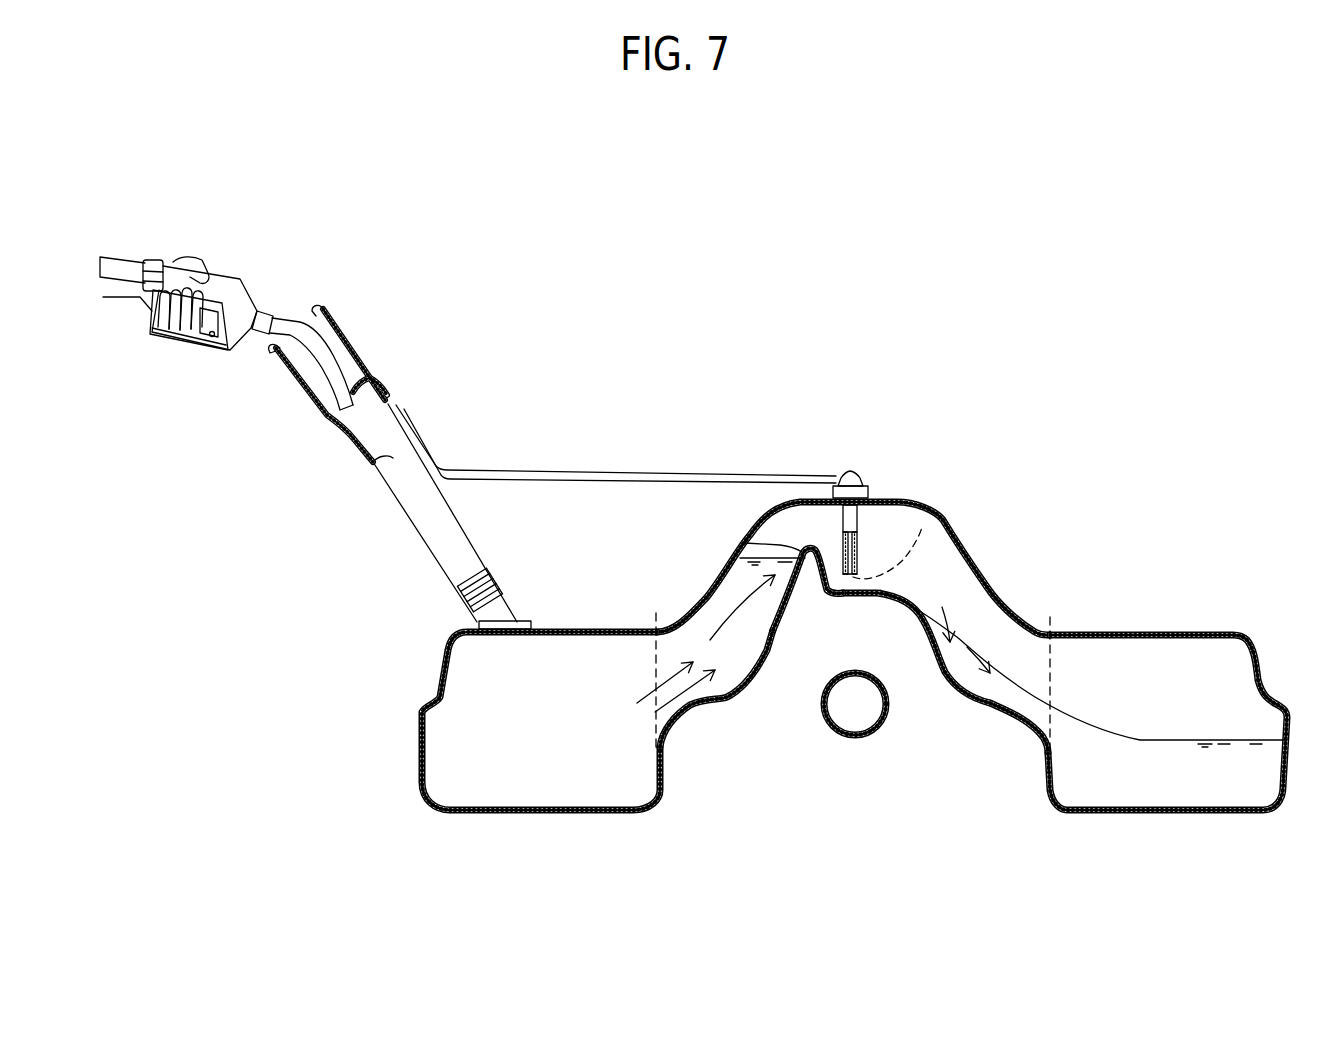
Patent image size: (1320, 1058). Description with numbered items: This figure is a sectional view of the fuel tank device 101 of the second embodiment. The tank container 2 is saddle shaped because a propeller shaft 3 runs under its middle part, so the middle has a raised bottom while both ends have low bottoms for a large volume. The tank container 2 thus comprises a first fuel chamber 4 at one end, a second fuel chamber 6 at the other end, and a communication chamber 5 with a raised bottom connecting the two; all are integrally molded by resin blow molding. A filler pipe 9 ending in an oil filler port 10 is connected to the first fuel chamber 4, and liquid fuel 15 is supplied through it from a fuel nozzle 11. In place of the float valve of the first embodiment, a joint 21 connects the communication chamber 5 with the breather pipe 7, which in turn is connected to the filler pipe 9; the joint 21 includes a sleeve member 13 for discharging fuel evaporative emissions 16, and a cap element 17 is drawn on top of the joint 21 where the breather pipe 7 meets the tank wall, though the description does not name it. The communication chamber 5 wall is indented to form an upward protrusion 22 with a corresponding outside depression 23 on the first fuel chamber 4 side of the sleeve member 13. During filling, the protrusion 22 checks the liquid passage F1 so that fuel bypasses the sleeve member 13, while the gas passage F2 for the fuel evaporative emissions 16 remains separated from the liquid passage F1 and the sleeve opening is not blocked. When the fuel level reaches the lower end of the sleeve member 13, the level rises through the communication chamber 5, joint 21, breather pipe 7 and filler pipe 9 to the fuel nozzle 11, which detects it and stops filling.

The tank container 2 is at (608, 628).
The propeller shaft 3 is at (828, 689).
The first fuel chamber 4 is at (530, 817).
The communication chamber 5 is at (963, 688).
The second fuel chamber 6 is at (1230, 817).
The breather pipe 7 is at (560, 473).
The filler pipe 9 is at (418, 510).
The oil filler port 10 is at (333, 397).
The fuel nozzle 11 is at (225, 283).
The sleeve member 13 is at (845, 530).
The liquid fuel 15 is at (587, 773).
The fuel evaporative emissions 16 is at (1167, 703).
The valve cap 17 is at (848, 474).
The joint 21 is at (842, 463).
The protrusion 22 is at (745, 543).
The depression 23 is at (808, 578).
The fuel tank device 101 is at (587, 380).
The liquid passage F1 is at (670, 712).
The gas passage F2 is at (925, 552).